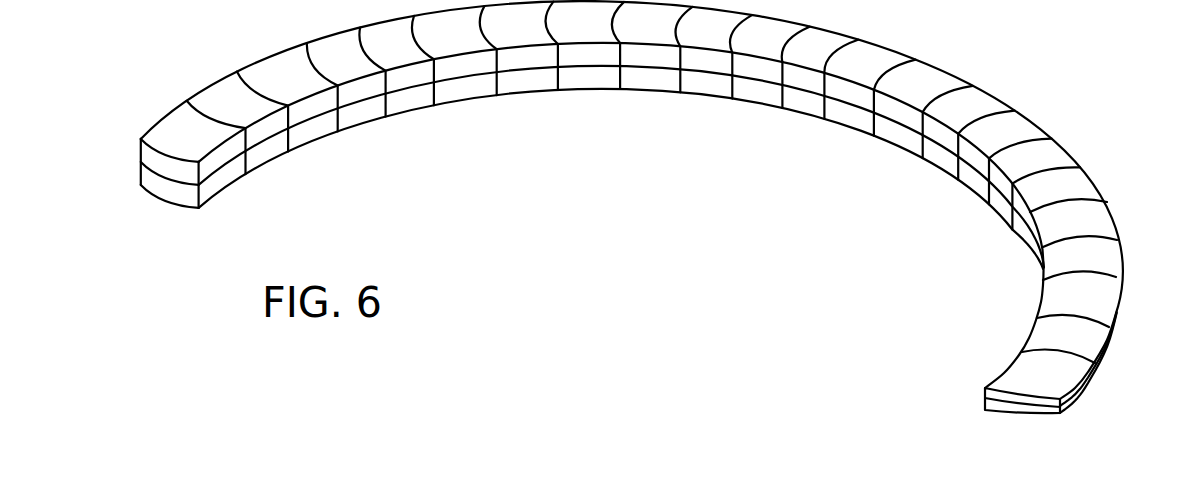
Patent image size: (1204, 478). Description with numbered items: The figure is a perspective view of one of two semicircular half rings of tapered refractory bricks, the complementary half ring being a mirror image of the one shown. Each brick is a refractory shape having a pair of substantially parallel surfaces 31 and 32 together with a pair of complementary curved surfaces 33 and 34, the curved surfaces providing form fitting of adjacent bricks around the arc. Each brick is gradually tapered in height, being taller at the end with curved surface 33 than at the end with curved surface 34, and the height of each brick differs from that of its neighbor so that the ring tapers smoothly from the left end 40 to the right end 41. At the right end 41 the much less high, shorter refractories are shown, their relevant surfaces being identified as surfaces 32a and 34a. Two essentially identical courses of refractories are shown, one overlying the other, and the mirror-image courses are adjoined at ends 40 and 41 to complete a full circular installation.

The substantially parallel surface 31 is at (227, 177).
The substantially parallel surface 32 is at (171, 115).
The surface of shorter refractory 32a is at (1088, 383).
The curved surface 33 is at (157, 193).
The curved surface 34 is at (158, 128).
The surface of shorter refractory 34a is at (985, 400).
The left end 40 is at (148, 217).
The right end 41 is at (1000, 414).